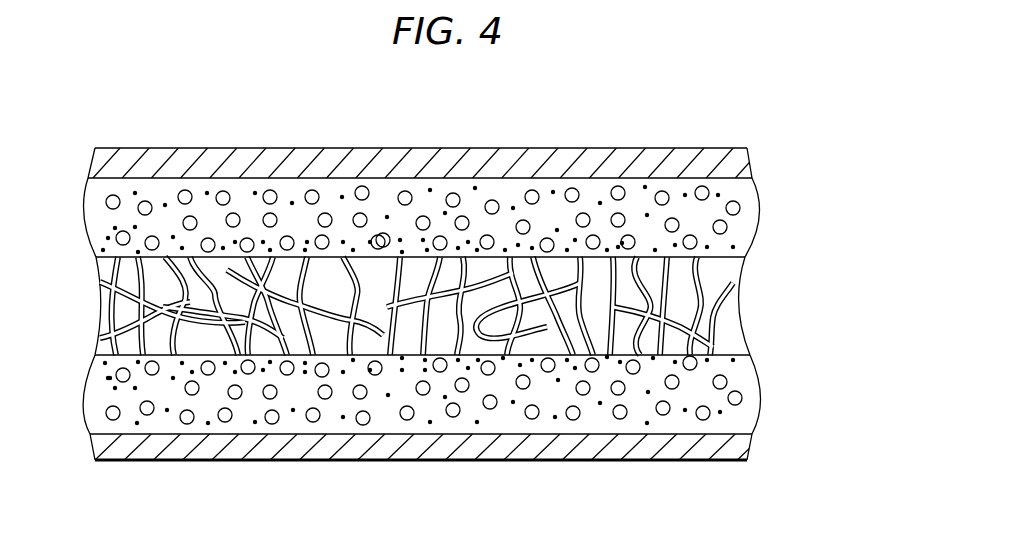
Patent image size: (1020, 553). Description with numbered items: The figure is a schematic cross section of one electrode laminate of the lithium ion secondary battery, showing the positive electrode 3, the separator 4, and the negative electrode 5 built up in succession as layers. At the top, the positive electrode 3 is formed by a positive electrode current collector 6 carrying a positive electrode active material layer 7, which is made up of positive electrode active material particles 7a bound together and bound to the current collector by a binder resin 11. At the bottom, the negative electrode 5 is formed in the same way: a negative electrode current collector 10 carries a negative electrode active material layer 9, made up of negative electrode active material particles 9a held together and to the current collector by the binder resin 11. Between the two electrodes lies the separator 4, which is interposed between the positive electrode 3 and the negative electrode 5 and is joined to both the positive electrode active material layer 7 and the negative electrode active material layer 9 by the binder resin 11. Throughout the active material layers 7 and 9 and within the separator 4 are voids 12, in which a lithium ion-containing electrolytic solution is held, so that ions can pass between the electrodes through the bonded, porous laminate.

The positive electrode 3 is at (477, 180).
The separator 4 is at (738, 298).
The negative electrode 5 is at (446, 433).
The positive electrode current collector 6 is at (733, 166).
The positive electrode active material layer 7 is at (747, 222).
The positive electrode active material particles 7a is at (531, 190).
The negative electrode active material layer 9 is at (420, 390).
The negative electrode active material particles 9a is at (573, 420).
The negative electrode current collector 10 is at (459, 444).
The binder resin 11 is at (108, 378).
The voids 12 is at (723, 268).